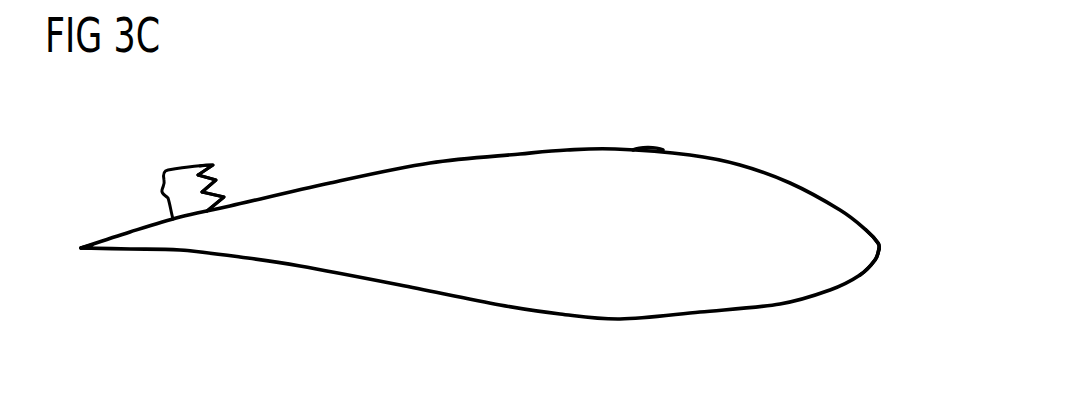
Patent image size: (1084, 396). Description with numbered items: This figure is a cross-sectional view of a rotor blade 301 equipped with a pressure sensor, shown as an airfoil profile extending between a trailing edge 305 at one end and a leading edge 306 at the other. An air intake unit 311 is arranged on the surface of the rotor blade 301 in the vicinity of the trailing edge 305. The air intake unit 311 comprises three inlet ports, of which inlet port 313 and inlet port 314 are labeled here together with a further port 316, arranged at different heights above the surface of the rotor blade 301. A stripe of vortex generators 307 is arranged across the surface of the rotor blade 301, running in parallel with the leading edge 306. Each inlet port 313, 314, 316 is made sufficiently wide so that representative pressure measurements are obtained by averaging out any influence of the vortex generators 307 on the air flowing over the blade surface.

The rotor blade 301 is at (523, 152).
The trailing edge 305 is at (82, 247).
The leading edge 306 is at (881, 248).
The vortex generators 307 is at (648, 148).
The air intake unit 311 is at (181, 168).
The inlet port 313 is at (213, 165).
The inlet port 314 is at (217, 180).
The second serration tooth 316 is at (225, 197).